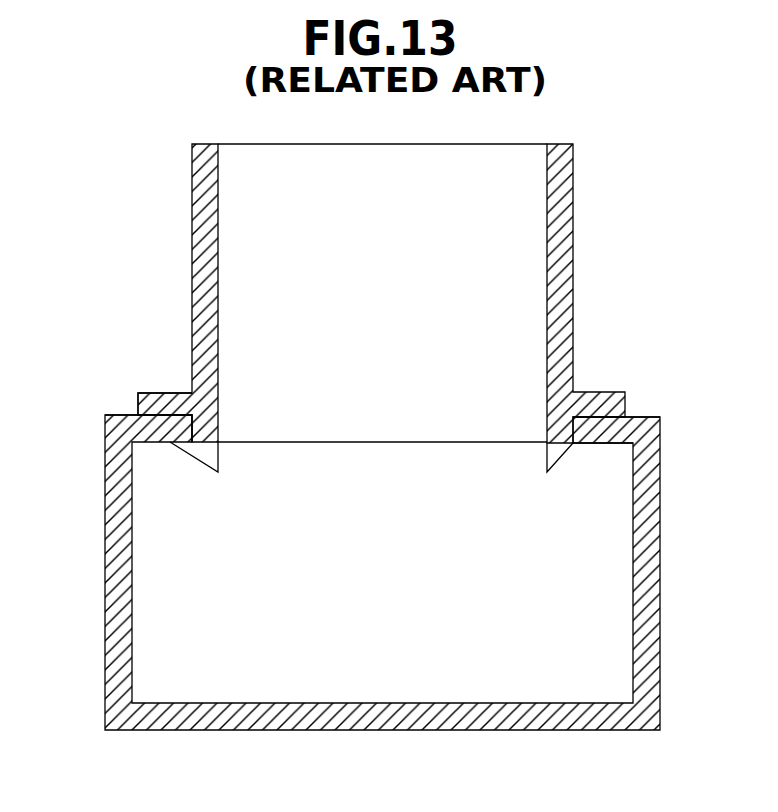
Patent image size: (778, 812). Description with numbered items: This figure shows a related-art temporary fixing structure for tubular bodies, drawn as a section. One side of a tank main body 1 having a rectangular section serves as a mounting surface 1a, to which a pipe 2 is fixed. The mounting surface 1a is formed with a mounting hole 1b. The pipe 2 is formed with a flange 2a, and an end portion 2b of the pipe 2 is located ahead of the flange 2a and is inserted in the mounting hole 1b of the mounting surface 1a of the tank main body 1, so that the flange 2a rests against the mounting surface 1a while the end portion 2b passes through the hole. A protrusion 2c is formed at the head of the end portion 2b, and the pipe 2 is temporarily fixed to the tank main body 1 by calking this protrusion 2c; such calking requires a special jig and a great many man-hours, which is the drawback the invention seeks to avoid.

The tank main body 1 is at (688, 521).
The mounting surface 1a is at (122, 413).
The mounting hole 1b is at (568, 428).
The pipe 2 is at (597, 186).
The flange 2a is at (178, 410).
The end portion 2b is at (213, 428).
The protrusion 2c is at (205, 448).